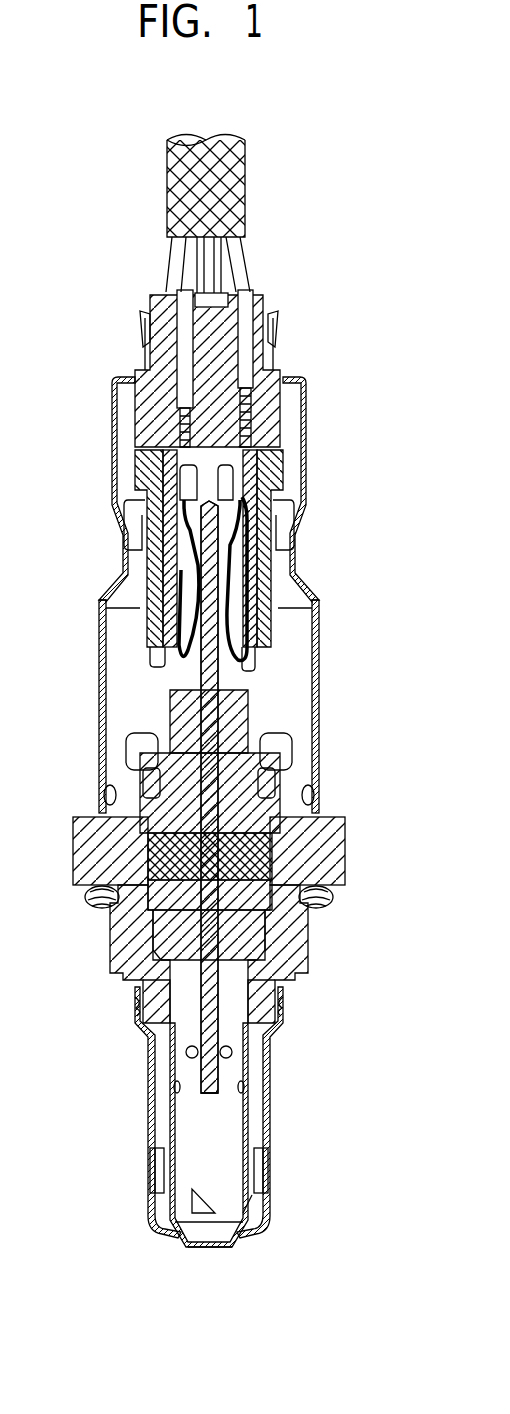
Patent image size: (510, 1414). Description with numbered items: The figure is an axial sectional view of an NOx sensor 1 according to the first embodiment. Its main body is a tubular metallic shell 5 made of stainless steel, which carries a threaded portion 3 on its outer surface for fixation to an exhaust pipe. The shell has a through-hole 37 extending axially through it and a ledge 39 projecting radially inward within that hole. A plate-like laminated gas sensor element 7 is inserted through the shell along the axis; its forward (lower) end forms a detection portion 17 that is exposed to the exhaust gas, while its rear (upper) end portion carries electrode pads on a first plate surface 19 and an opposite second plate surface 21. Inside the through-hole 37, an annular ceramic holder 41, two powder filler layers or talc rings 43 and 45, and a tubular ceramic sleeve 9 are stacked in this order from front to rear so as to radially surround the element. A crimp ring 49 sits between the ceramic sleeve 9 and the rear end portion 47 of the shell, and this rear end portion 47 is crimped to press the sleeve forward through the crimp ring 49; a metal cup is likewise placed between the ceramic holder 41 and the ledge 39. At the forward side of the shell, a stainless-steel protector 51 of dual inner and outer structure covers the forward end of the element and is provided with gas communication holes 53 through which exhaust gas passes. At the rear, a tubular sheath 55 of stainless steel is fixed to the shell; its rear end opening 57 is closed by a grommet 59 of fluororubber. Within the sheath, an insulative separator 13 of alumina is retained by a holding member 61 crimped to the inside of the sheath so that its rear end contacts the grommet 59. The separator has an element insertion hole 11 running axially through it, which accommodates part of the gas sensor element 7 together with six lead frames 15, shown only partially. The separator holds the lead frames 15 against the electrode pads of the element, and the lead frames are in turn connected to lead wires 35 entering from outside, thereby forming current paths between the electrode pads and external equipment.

The NOx sensor 1 is at (396, 172).
The threaded portion 3 is at (313, 923).
The metallic shell 5 is at (337, 828).
The gas sensor element 7 is at (207, 718).
The ceramic sleeve 9 is at (242, 698).
The element insertion hole 11 is at (228, 635).
The insulative separator 13 is at (247, 567).
The lead frames 15 is at (243, 512).
The detection portion 17 is at (198, 1089).
The first plate surface 19 is at (310, 803).
The second plate surface 21 is at (96, 816).
The lead wires 35 is at (187, 280).
The through-hole 37 is at (235, 1010).
The ledge 39 is at (170, 980).
The ceramic holder 41 is at (253, 937).
The powder filler layer 43 is at (262, 890).
The powder filler layer 45 is at (258, 843).
The rear end portion 47 is at (263, 732).
The crimp ring 49 is at (280, 770).
The protector 51 is at (273, 965).
The gas communication holes 53 is at (253, 1087).
The tubular sheath 55 is at (100, 720).
The rear end opening 57 is at (150, 332).
The grommet 59 is at (227, 332).
The holding member 61 is at (133, 593).